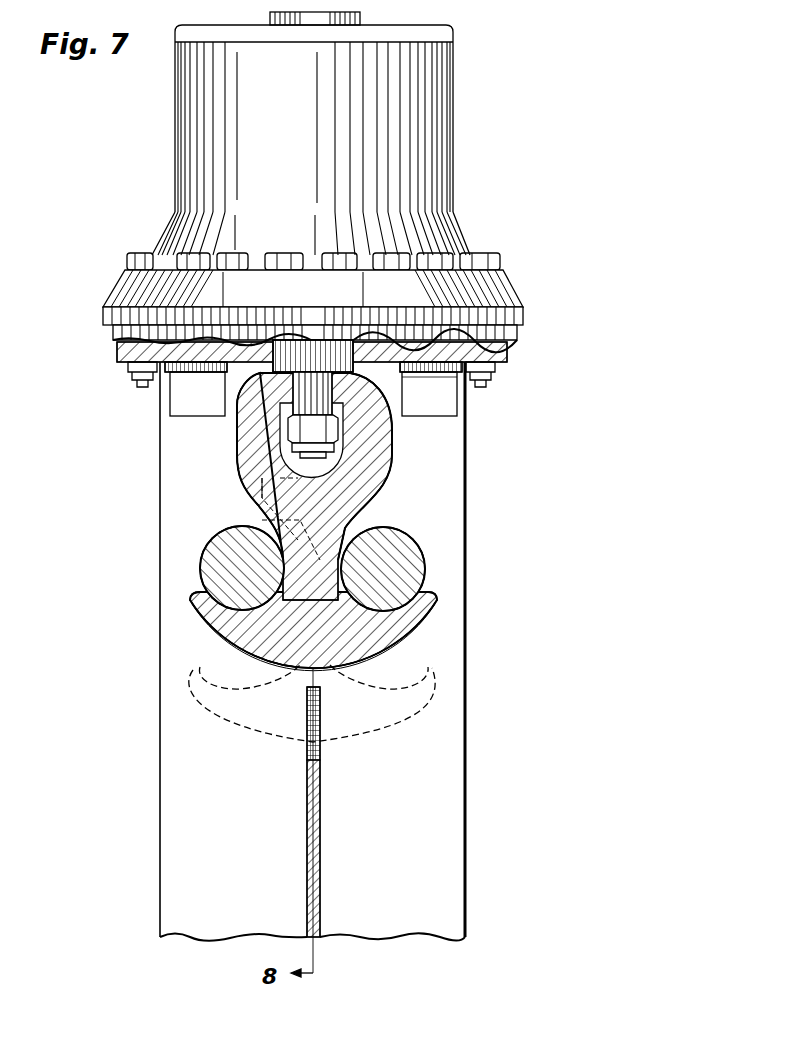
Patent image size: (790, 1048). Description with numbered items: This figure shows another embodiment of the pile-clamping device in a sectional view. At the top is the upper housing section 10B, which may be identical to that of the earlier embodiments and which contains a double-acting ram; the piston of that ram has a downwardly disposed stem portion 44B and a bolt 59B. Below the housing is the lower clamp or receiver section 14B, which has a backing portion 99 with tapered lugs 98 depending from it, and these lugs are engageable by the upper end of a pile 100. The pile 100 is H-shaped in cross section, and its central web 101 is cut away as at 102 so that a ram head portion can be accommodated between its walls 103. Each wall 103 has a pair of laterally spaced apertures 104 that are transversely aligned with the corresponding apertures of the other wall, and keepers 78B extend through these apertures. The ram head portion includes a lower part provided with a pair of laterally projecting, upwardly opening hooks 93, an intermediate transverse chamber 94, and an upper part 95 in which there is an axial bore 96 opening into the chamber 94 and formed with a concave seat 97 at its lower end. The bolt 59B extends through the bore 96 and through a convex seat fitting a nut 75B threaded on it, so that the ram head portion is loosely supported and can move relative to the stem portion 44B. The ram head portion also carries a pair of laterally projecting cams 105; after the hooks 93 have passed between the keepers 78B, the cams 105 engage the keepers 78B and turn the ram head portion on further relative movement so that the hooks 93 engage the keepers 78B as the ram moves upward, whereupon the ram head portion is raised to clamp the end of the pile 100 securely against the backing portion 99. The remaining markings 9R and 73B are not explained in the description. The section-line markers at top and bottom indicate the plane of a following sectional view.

The upper housing section 10B is at (448, 148).
The lower clamp or receiver section 14B is at (508, 339).
The stem portion 44B is at (405, 392).
The backing portion 99 is at (213, 388).
The tapered lugs 98 is at (183, 400).
The upper part 95 is at (243, 418).
The bolt 59B is at (240, 440).
The concave seat 97 is at (245, 448).
The transverse chamber 94 is at (238, 482).
The nut 75B is at (275, 490).
The cams 105 is at (262, 520).
The bore 96 is at (337, 387).
The rotor 9R is at (402, 459).
The hub 73B is at (385, 472).
The apertures 104 is at (206, 568).
The keepers 78B is at (195, 598).
The hooks 93 is at (205, 630).
The walls 103 is at (444, 734).
The pile 100 is at (476, 777).
The central web 101 is at (322, 870).
The cut-away 102 is at (300, 681).